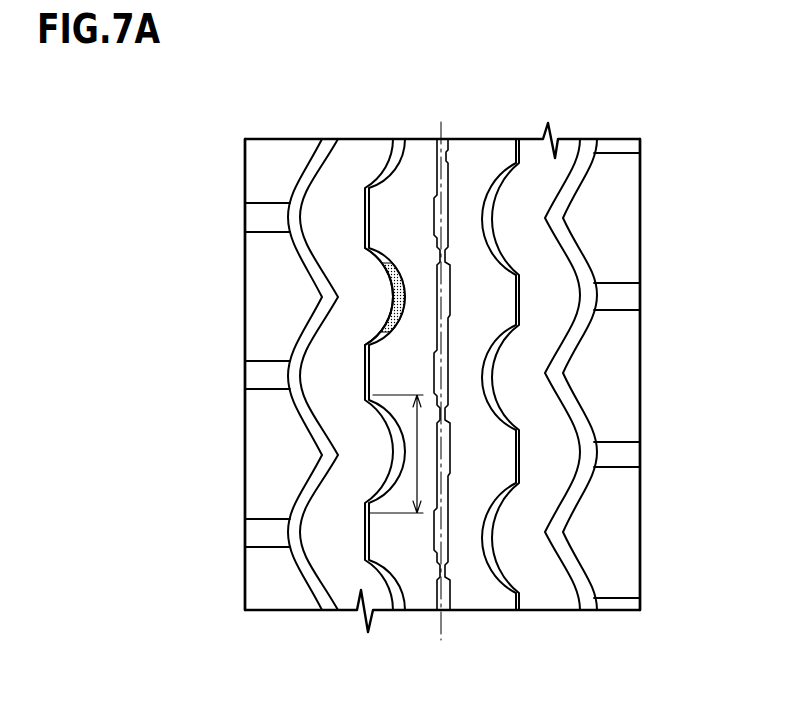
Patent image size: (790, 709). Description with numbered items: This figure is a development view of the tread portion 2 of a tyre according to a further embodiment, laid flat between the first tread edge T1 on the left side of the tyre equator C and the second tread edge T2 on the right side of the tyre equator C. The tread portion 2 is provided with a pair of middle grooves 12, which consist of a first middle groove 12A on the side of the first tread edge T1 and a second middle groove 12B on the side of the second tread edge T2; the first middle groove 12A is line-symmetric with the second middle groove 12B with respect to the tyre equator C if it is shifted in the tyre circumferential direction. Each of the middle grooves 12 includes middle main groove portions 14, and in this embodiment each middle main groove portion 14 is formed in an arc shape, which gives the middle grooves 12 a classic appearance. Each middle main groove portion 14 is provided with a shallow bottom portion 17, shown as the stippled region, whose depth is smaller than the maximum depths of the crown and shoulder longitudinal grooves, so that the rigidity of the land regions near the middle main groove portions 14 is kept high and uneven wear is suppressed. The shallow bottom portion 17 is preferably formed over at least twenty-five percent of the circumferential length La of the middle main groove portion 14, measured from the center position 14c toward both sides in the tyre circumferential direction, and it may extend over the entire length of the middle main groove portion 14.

The tread portion 2 is at (620, 117).
The middle grooves 12 is at (313, 338).
The first middle groove 12A is at (291, 374).
The second middle groove 12B is at (498, 178).
The middle main groove portion 14 is at (394, 252).
The center position 14c is at (388, 297).
The shallow bottom portion 17 is at (394, 287).
The tyre equator C is at (442, 365).
The first tread edge T1 is at (245, 180).
The second tread edge T2 is at (640, 180).
The length La is at (417, 468).